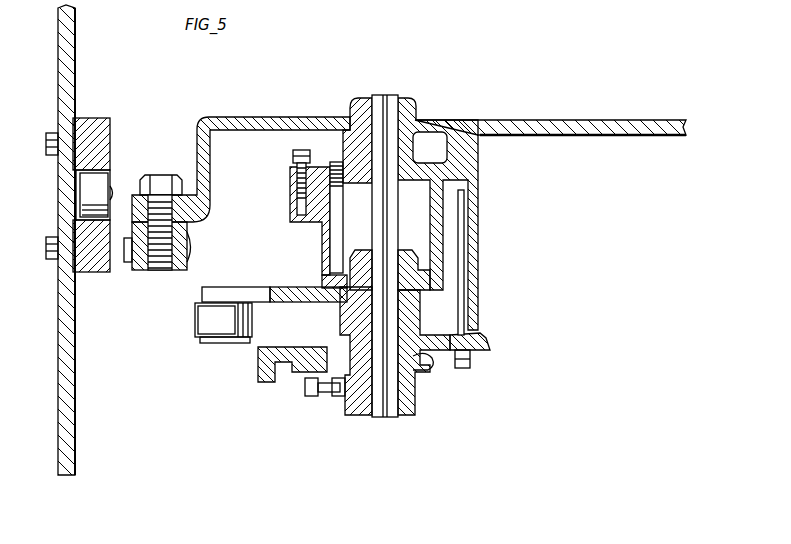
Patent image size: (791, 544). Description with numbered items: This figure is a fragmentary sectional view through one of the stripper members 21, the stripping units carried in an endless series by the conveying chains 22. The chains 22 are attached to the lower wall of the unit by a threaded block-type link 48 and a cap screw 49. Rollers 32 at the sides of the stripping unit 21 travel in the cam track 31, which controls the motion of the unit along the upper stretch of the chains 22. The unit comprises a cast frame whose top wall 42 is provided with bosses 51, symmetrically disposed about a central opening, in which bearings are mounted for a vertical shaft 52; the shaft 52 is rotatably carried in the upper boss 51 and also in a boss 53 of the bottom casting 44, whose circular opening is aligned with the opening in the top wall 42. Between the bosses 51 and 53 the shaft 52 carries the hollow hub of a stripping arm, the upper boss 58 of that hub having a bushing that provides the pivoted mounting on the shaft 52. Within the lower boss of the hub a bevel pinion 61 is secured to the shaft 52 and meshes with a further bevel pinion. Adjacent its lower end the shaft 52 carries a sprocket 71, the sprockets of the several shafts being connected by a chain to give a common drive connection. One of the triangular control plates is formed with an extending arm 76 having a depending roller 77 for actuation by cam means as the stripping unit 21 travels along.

The stripper member 21 is at (570, 117).
The endless chain 22 is at (188, 243).
The track 31 is at (88, 125).
The roller 32 is at (85, 193).
The top wall 42 is at (235, 117).
The bottom casting 44 is at (482, 350).
The threaded block-type link 48 is at (141, 268).
The cap screw 49 is at (162, 268).
The boss 51 is at (416, 108).
The vertical shaft 52 is at (375, 100).
The boss 53 is at (416, 360).
The upper boss 58 is at (356, 156).
The bevel pinion 61 is at (412, 252).
The sprocket 71 is at (347, 393).
The extending arm 76 is at (283, 265).
The depending roller 77 is at (195, 318).